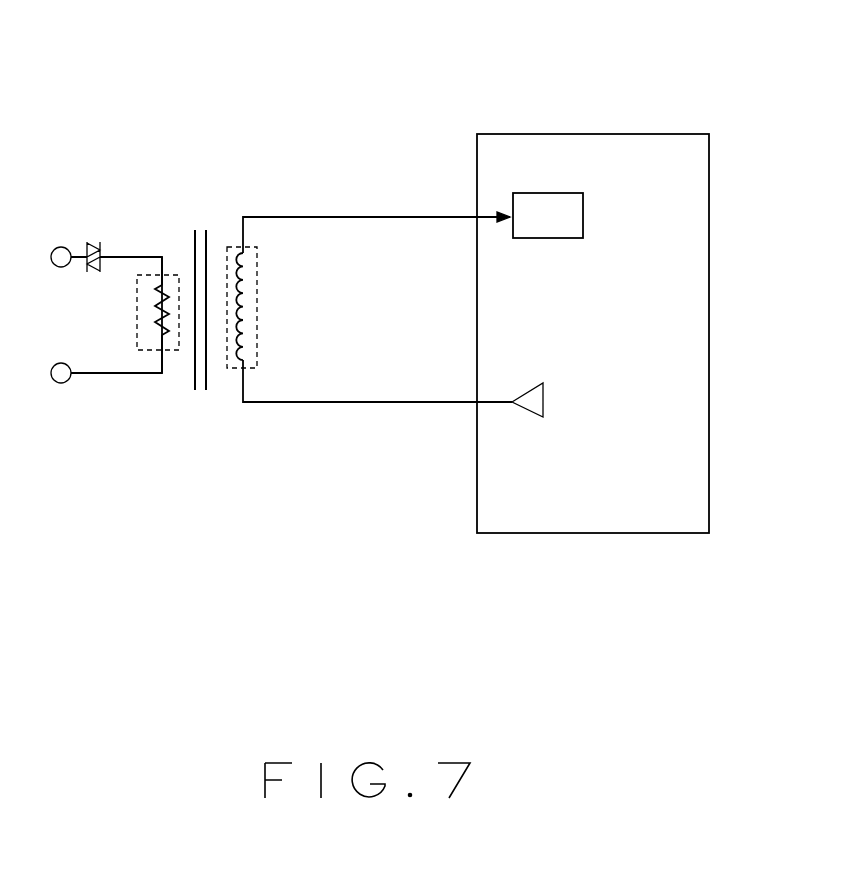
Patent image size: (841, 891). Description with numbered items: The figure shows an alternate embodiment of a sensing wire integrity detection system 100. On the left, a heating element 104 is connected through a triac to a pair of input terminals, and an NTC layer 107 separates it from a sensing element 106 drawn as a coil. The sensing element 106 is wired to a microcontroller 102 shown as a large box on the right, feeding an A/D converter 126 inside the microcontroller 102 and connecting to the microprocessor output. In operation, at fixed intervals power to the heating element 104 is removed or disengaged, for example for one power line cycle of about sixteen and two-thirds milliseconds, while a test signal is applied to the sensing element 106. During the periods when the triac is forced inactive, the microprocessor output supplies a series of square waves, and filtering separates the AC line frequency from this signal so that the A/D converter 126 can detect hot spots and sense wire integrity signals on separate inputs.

The sensing wire integrity detection system 100 is at (366, 94).
The microcontroller 102 is at (685, 193).
The heating element 104 is at (137, 323).
The sensing element 106 is at (253, 300).
The NTC layer 107 is at (202, 220).
The A/D converter 126 is at (542, 192).